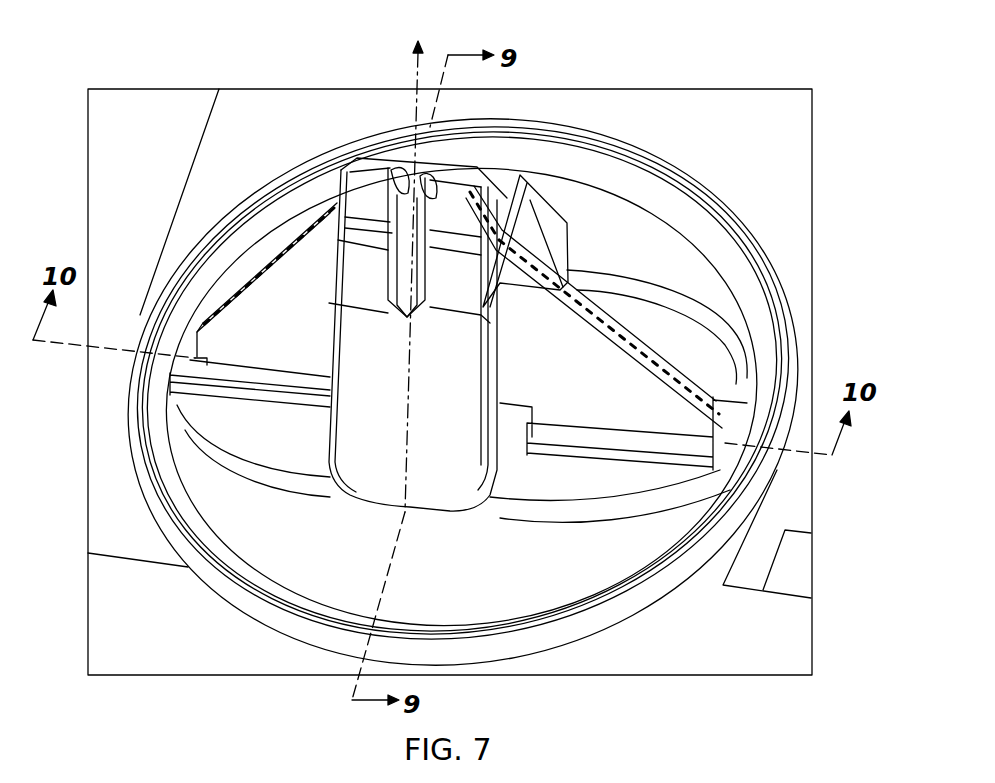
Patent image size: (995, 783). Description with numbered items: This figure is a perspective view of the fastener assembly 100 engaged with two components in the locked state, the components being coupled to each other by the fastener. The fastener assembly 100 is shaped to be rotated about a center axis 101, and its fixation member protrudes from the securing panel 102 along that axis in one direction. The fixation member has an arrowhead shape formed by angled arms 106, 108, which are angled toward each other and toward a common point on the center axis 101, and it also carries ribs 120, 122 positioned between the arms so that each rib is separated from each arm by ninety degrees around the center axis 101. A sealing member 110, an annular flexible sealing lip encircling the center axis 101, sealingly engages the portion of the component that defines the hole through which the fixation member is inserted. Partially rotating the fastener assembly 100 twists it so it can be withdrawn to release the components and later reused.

The fastener assembly 100 is at (300, 201).
The center axis 101 is at (416, 78).
The securing panel 102 is at (612, 467).
The angled arm 106 is at (453, 427).
The angled arm 108 is at (532, 197).
The sealing member 110 is at (690, 190).
The rib 120 is at (275, 290).
The rib 122 is at (590, 360).